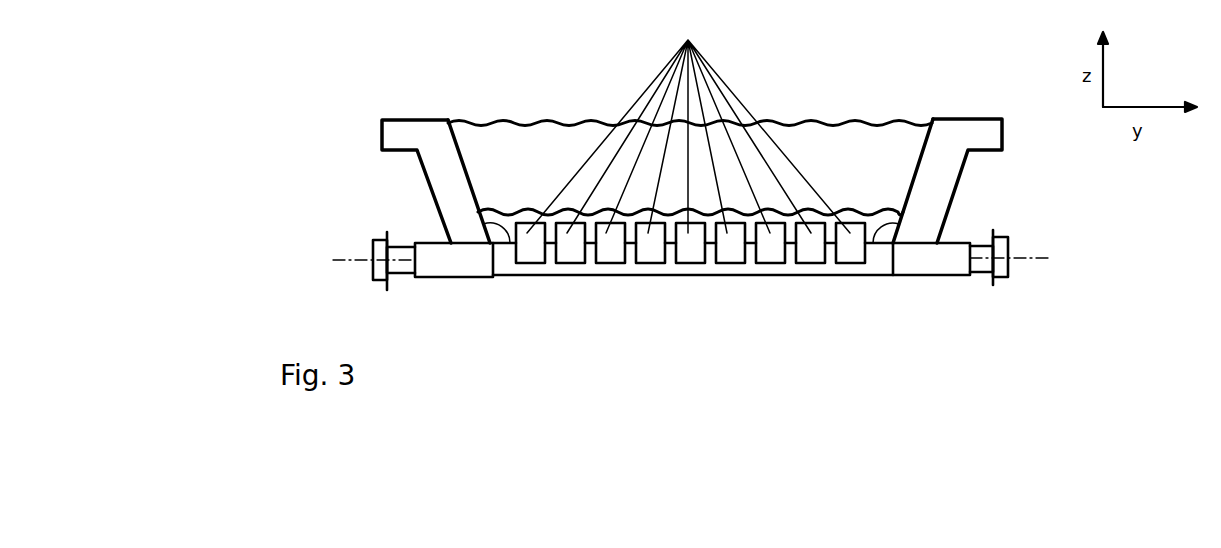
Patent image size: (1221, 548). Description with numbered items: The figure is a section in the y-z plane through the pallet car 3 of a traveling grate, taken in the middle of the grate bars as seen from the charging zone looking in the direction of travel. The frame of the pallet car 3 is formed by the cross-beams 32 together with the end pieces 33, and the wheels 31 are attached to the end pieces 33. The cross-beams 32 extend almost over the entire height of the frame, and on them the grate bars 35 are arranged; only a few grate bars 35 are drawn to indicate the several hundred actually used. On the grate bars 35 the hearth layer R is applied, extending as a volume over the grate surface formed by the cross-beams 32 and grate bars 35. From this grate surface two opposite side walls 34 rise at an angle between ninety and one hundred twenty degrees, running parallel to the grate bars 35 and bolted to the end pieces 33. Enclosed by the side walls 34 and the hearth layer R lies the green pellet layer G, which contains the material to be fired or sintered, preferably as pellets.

The pallet car 3 is at (427, 105).
The wheels 31 is at (382, 273).
The cross-beams 32 is at (670, 257).
The end pieces 33 is at (475, 267).
The side walls 34 is at (395, 138).
The grate bars 35 is at (688, 122).
The green pellet layer G is at (515, 173).
The hearth layer R is at (877, 212).